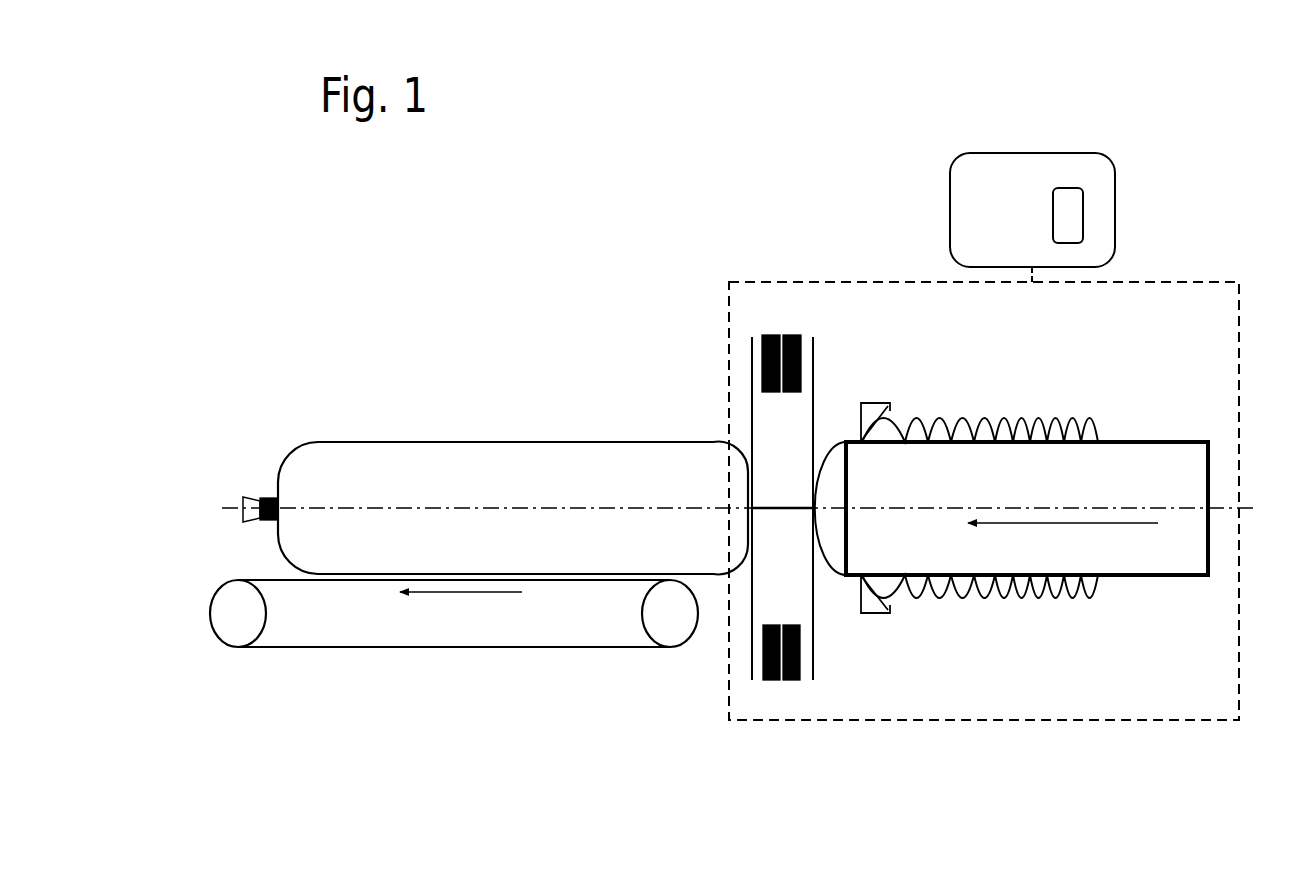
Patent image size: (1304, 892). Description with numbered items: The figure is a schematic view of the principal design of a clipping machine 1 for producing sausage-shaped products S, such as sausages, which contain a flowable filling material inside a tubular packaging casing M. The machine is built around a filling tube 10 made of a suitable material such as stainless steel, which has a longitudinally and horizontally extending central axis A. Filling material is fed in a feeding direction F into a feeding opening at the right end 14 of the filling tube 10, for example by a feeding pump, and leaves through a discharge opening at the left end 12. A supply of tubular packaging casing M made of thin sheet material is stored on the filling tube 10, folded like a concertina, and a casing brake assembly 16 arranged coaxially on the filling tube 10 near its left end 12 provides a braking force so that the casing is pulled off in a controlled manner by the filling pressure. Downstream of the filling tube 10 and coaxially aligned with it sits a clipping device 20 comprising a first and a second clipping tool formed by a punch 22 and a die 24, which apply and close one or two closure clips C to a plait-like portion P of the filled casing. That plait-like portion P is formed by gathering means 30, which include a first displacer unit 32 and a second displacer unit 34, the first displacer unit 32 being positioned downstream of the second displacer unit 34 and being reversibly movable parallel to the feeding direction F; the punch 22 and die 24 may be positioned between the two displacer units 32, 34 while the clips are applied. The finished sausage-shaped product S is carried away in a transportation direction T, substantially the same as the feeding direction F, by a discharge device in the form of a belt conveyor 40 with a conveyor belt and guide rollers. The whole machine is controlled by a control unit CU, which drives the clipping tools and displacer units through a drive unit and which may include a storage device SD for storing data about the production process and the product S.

The sausage production system 1 is at (806, 274).
The filling tube 10 is at (1140, 438).
The left end of filling tube 12 is at (852, 535).
The right end of filling tube 14 is at (1210, 468).
The casing brake assembly 16 is at (893, 402).
The clipping device 20 is at (682, 379).
The punch 22 is at (800, 363).
The die 24 is at (763, 653).
The gathering means 30 is at (909, 728).
The first displacer unit 32 is at (815, 597).
The second displacer unit 34 is at (755, 572).
The belt conveyor 40 is at (477, 660).
The sausage-shaped product S is at (497, 440).
The closure clip C is at (262, 502).
The plait-like portion P is at (782, 506).
The transportation direction T is at (461, 608).
The feeding direction F is at (1063, 541).
The tubular packaging casing M is at (1053, 418).
The central axis A is at (1255, 512).
The control unit CU is at (950, 208).
The storage device SD is at (1083, 215).